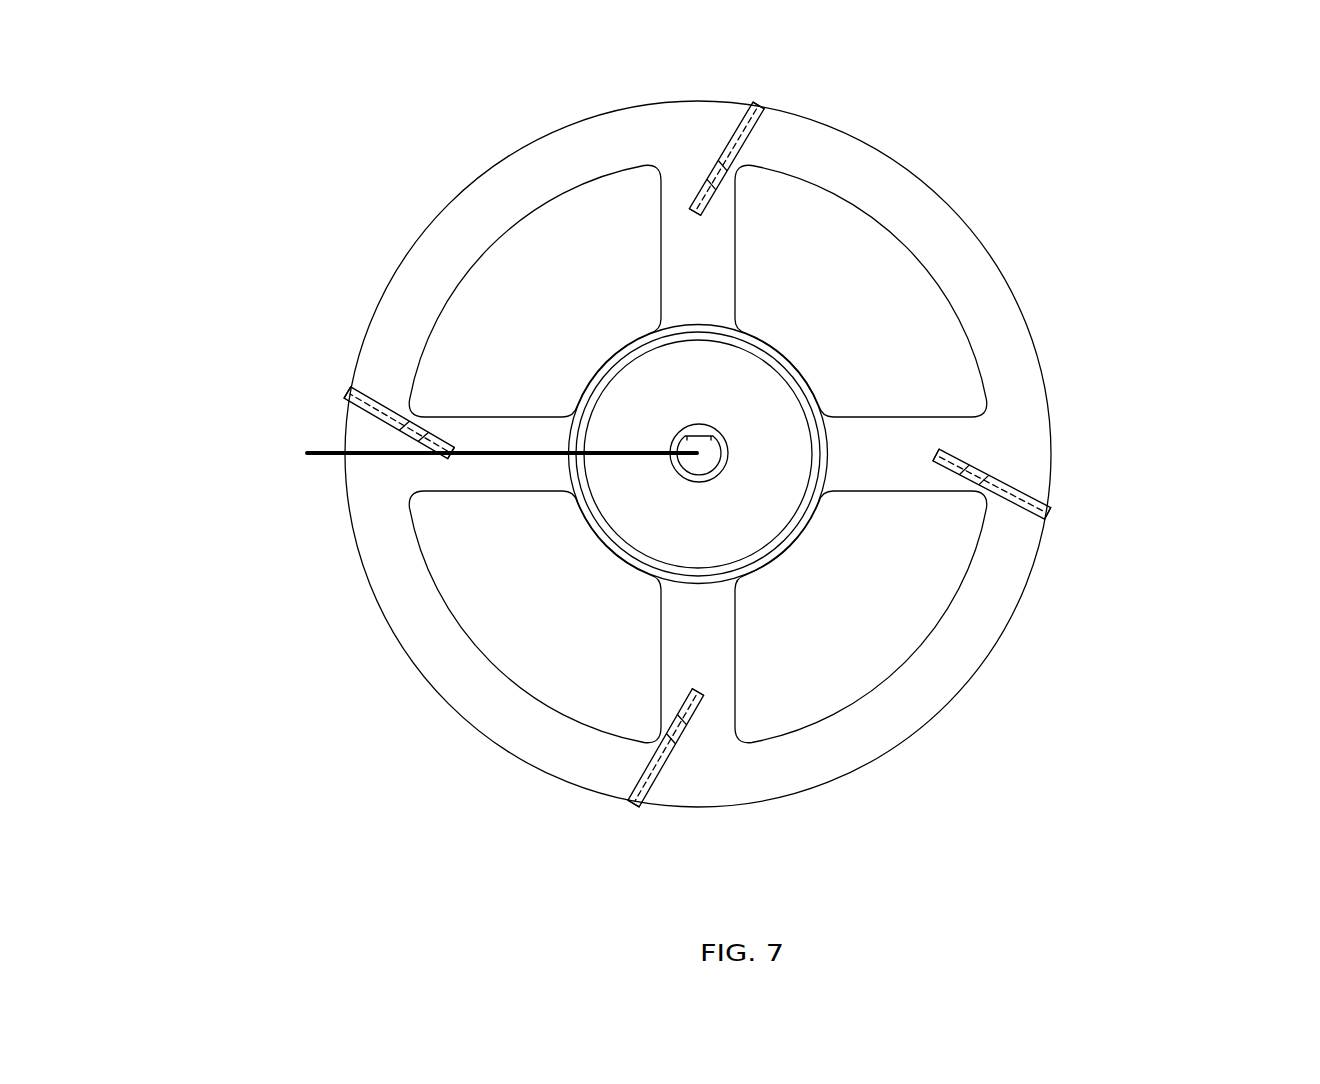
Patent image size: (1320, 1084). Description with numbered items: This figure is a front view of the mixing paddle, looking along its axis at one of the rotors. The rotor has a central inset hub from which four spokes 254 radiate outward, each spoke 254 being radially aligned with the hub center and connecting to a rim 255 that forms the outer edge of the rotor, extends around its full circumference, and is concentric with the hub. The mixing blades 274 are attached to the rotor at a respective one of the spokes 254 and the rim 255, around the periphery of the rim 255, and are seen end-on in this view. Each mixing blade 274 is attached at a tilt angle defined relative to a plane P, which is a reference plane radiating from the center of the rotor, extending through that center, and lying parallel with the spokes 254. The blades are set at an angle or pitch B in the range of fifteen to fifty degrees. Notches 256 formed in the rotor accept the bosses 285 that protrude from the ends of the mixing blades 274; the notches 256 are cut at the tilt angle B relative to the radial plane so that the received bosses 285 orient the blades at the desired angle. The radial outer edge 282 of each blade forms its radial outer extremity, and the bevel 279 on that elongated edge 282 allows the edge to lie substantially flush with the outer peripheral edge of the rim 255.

The spokes 254 is at (697, 273).
The rim 255 is at (972, 640).
The notches 256 is at (687, 205).
The mixing blades 274 is at (698, 158).
The bevel 279 is at (757, 108).
The outer edge 282 is at (745, 97).
The boss 285 is at (699, 203).
The plane P is at (486, 452).
The tilt angle B is at (372, 437).